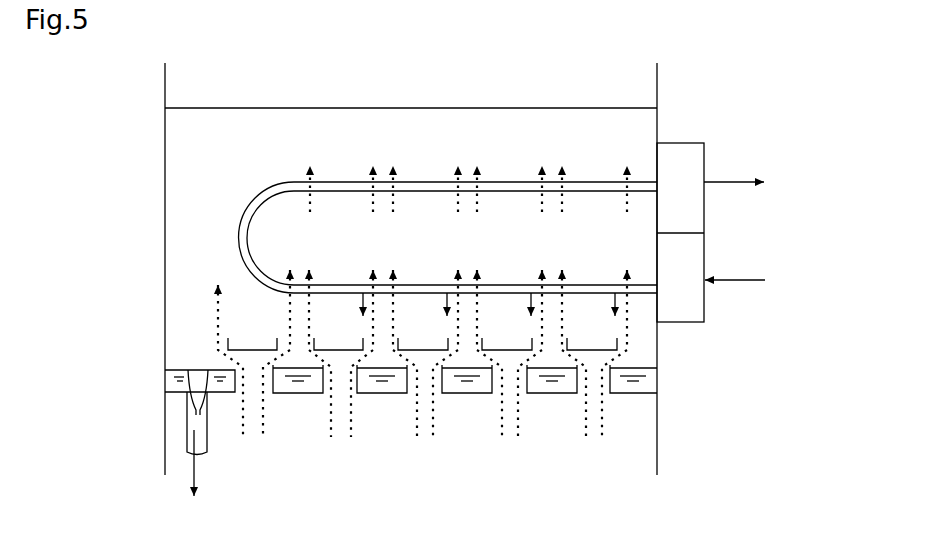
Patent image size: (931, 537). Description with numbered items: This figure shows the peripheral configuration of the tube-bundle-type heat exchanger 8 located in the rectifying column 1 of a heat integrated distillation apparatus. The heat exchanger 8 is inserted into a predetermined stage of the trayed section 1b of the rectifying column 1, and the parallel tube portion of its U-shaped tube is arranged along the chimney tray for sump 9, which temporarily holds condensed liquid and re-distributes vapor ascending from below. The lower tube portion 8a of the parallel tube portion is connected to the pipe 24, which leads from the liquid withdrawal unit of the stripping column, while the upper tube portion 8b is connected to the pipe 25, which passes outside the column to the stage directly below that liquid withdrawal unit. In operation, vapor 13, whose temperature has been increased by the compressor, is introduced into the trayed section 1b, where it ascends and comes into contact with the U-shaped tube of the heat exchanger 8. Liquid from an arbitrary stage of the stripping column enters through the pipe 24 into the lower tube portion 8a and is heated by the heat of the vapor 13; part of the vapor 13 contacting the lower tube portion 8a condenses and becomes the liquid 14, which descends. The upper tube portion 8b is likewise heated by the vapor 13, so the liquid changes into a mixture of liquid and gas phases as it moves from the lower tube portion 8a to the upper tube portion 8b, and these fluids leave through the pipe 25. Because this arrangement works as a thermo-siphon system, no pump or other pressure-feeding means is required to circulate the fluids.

The rectifying column 1 is at (158, 251).
The trayed section 1b is at (426, 98).
The tube-bundle-type heat exchanger 8 is at (678, 293).
The lower tube portion 8a is at (598, 283).
The upper tube portion 8b is at (597, 182).
The chimney tray for sump 9 is at (178, 392).
The vapor 13 is at (478, 199).
The liquid 14 is at (360, 300).
The pipe 24 is at (730, 281).
The pipe 25 is at (730, 183).